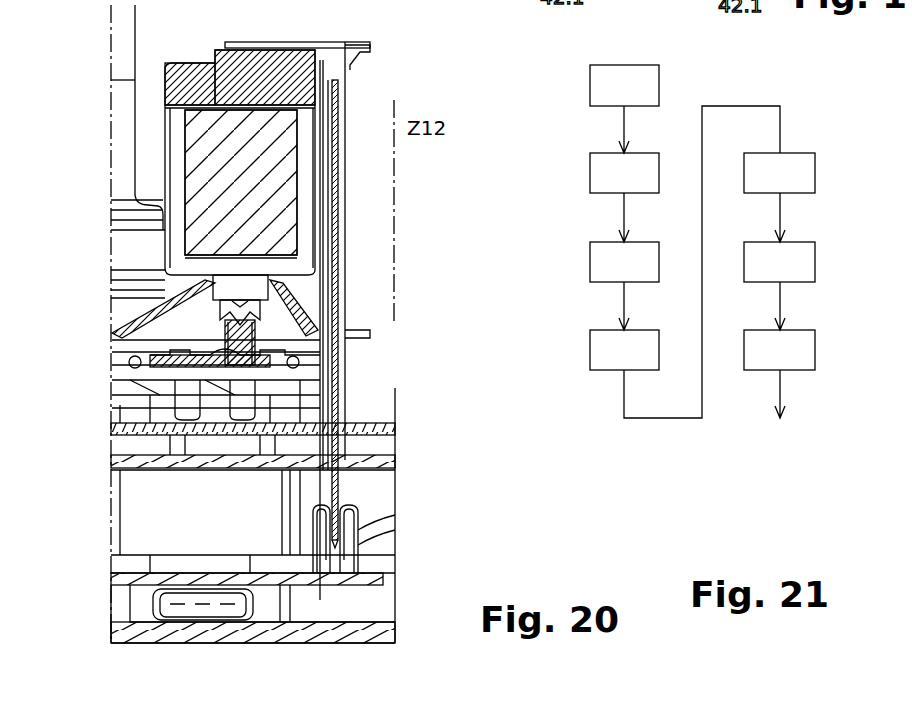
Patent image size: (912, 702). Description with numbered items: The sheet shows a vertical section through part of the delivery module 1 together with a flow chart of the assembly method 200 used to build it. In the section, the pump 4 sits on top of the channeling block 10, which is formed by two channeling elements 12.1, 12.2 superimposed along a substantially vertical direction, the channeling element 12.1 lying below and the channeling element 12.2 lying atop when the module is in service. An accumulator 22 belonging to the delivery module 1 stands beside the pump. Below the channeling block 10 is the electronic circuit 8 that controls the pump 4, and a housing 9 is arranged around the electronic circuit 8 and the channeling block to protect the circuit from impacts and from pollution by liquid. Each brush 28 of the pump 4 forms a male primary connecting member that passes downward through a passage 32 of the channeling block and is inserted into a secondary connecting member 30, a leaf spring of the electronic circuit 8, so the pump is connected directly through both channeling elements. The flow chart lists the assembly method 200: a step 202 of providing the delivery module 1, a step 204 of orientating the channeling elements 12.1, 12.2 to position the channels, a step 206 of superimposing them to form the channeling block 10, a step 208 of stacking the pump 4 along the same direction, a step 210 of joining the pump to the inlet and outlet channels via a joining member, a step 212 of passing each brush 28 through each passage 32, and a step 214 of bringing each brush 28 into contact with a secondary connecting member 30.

In FIG. 20, the delivery module 1 is at (413, 315).
In FIG. 20, the pump 4 is at (235, 175).
In FIG. 20, the electronic circuit 8 is at (383, 582).
In FIG. 20, the housing 9 is at (395, 645).
In FIG. 20, the channeling block 10 is at (322, 438).
In FIG. 20, the channeling element 12.1 is at (395, 465).
In FIG. 20, the channeling element 12.2 is at (395, 432).
In FIG. 20, the accumulator 22 is at (124, 45).
In FIG. 20, the brush 28 is at (330, 510).
In FIG. 20, the secondary connecting member 30 is at (350, 520).
In FIG. 20, the passage 32 is at (352, 413).
In FIG. 21, the assembly method 200 is at (702, 296).
In FIG. 21, the providing step 202 is at (624, 85).
In FIG. 21, the orientating step 204 is at (624, 173).
In FIG. 21, the superimposing step 206 is at (624, 262).
In FIG. 21, the stacking step 208 is at (624, 350).
In FIG. 21, the joining step 210 is at (779, 173).
In FIG. 21, the passing step 212 is at (779, 262).
In FIG. 21, the contacting step 214 is at (779, 350).